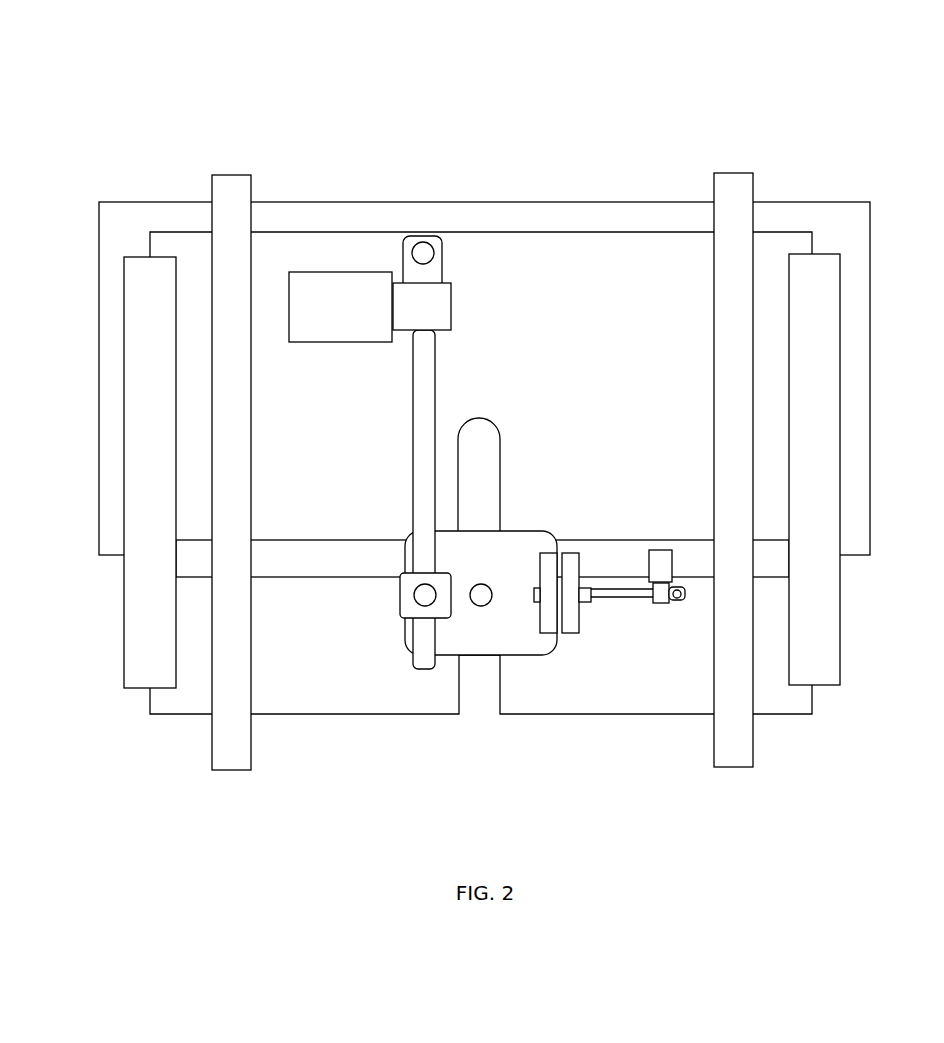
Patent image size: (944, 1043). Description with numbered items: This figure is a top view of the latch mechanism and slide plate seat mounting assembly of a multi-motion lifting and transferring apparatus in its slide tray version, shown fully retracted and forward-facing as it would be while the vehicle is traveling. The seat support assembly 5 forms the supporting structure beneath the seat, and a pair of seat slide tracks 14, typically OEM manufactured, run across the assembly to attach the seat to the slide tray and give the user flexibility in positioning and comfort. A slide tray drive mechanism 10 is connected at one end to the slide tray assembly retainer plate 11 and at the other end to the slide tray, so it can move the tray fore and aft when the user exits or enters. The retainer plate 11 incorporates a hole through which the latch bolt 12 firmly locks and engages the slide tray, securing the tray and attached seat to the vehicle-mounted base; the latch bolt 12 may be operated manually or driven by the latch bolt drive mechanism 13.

The seat support assembly 5 is at (145, 621).
The slide tray drive mechanism 10 is at (338, 298).
The slide tray assembly retainer plate 11 is at (507, 544).
The latch bolt 12 is at (588, 597).
The latch bolt drive mechanism 13 is at (662, 572).
The seat slide tracks 14 is at (727, 196).